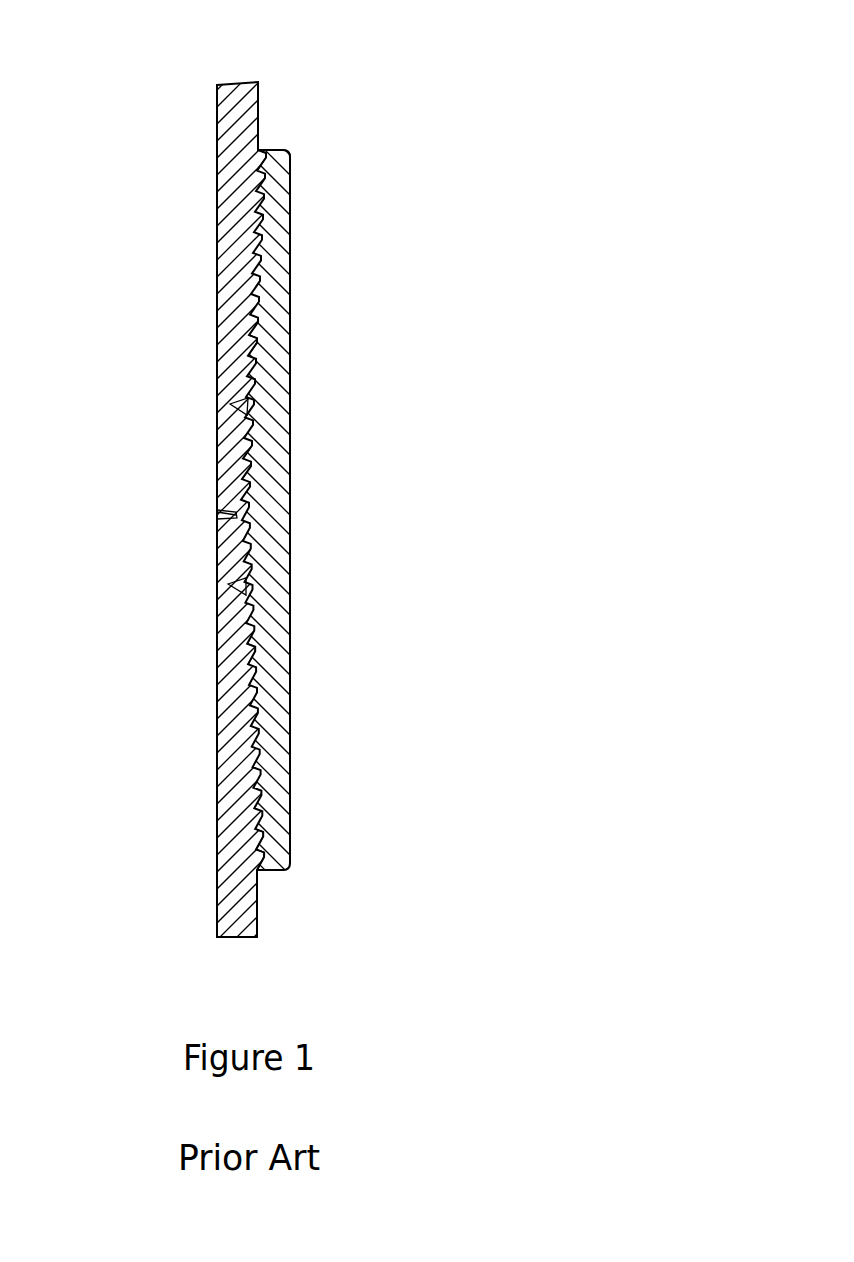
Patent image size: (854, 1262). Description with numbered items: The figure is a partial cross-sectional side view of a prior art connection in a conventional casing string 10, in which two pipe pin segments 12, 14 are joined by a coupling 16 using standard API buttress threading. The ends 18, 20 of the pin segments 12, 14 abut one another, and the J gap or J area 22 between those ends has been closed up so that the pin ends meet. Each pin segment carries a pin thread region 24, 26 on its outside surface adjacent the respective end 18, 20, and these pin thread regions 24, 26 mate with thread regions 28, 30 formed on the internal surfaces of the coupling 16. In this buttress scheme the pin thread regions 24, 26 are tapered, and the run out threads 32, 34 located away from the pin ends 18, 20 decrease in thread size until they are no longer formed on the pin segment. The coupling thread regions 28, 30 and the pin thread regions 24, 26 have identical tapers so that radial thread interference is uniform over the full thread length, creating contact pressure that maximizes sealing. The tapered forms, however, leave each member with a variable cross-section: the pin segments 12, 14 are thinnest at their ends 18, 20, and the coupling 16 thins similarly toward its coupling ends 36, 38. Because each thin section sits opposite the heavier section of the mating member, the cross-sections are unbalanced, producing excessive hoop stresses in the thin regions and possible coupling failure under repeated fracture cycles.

The casing string 10 is at (438, 85).
The pin segment 12 is at (228, 237).
The pin segment 14 is at (217, 767).
The coupling 16 is at (265, 702).
The end of pin segment 18 is at (217, 512).
The end of pin segment 20 is at (217, 518).
The J gap 22 is at (217, 515).
The pin thread region 24 is at (250, 340).
The pin thread region 26 is at (250, 648).
The coupling thread region 28 is at (243, 417).
The coupling thread region 30 is at (260, 607).
The run out threads 32 is at (258, 172).
The run out threads 34 is at (256, 845).
The coupling end 36 is at (273, 152).
The coupling end 38 is at (283, 872).